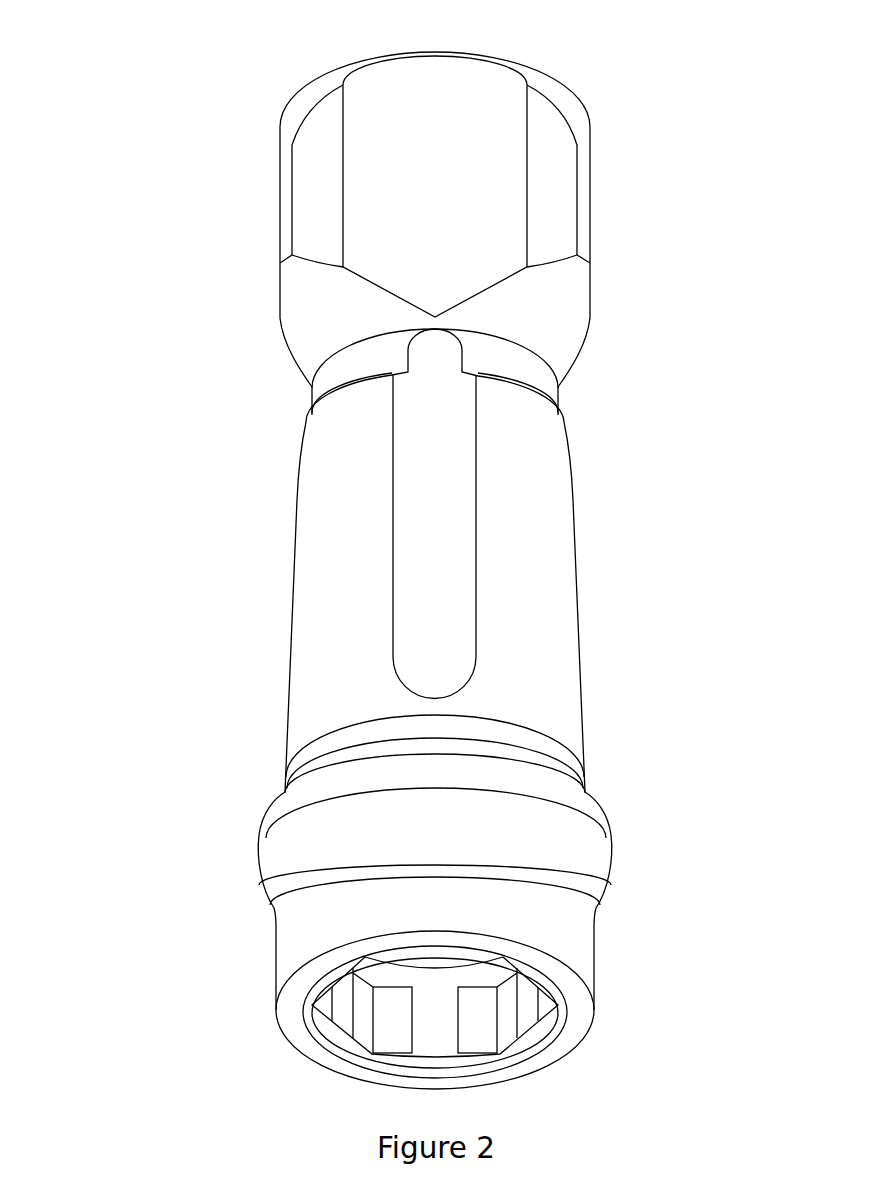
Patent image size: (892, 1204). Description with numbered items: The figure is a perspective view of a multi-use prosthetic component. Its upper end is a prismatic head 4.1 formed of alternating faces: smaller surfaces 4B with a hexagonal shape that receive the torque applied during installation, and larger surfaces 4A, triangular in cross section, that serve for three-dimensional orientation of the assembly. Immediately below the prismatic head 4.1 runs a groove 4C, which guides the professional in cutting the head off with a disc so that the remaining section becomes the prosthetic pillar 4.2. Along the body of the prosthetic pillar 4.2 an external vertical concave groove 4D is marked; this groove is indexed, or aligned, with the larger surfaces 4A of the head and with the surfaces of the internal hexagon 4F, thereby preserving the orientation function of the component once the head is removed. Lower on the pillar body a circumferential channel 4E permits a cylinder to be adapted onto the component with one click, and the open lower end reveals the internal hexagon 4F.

The prismatic head 4.1 is at (207, 61).
The prosthetic pillar 4.2 is at (652, 413).
The larger surfaces 4A is at (430, 168).
The smaller surfaces 4B is at (557, 168).
The groove for guiding the cutting 4C is at (293, 406).
The external vertical concave grooves 4D is at (423, 508).
The channel 4E is at (333, 740).
The internal hexagon 4F is at (433, 1047).